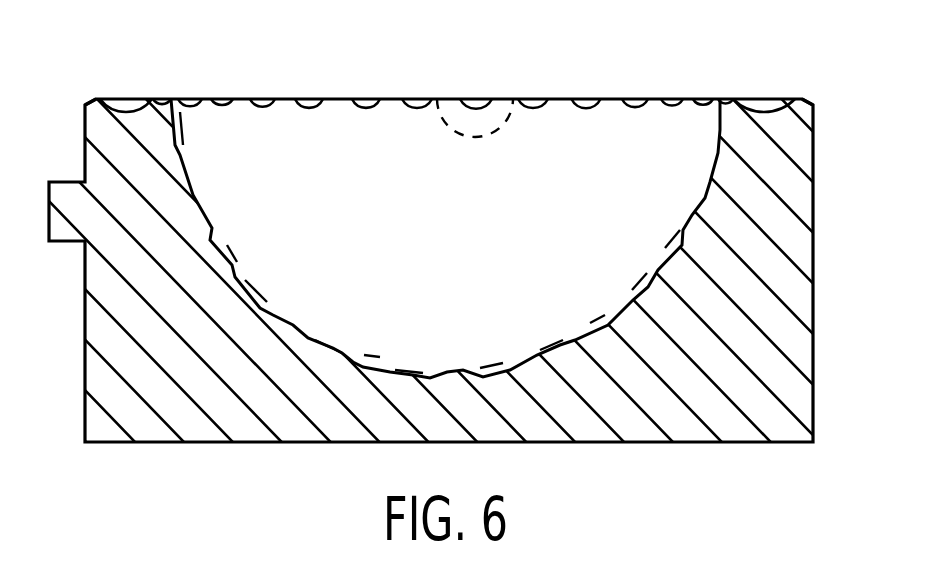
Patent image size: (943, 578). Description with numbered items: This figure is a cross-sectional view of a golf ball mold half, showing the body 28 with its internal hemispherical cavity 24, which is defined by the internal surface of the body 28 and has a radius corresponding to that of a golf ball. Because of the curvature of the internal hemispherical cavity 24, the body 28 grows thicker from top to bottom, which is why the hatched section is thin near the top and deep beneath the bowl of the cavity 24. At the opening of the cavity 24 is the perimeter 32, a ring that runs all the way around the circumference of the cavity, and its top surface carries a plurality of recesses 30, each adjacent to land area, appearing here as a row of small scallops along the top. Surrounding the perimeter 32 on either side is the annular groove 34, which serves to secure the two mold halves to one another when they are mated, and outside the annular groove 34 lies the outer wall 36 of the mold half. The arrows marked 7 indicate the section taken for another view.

The section line / view direction 7 is at (439, 99).
The internal hemispherical cavity 24 is at (578, 158).
The body 28 is at (788, 332).
The recess 30 is at (265, 103).
The perimeter 32 is at (169, 101).
The annular groove 34 is at (131, 103).
The outer wall 36 is at (99, 99).